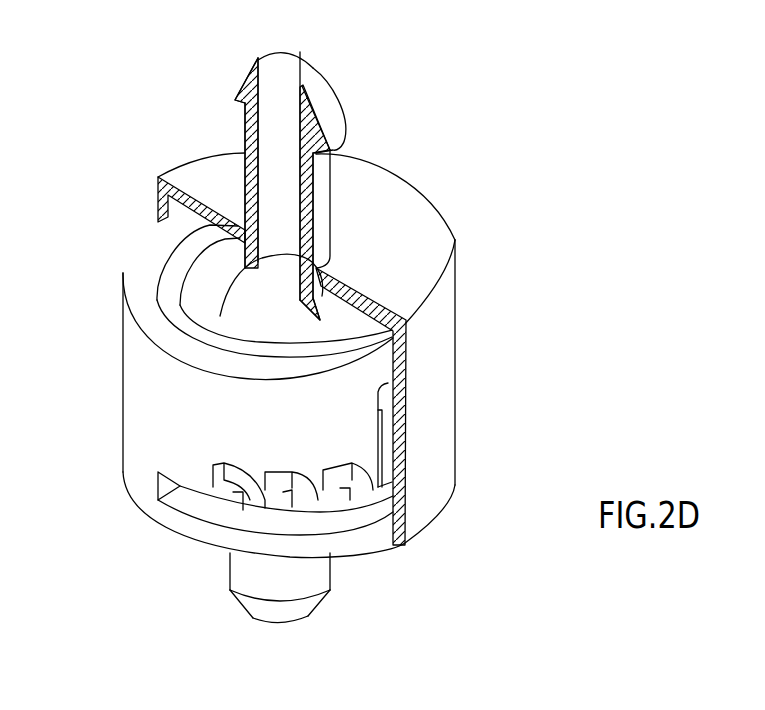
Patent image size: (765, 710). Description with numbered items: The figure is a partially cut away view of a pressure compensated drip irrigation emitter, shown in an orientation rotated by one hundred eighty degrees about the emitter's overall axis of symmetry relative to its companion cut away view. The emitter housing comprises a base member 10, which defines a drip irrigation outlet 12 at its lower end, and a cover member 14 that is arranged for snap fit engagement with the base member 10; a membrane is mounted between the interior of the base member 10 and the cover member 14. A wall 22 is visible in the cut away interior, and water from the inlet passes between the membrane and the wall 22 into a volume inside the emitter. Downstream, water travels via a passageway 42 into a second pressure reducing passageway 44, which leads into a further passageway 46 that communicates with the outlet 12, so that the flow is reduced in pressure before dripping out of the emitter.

The base member 10 is at (395, 592).
The drip irrigation outlet 12 is at (247, 568).
The cover member 14 is at (448, 143).
The wall 22 is at (227, 300).
The passageway 42 is at (400, 418).
The second pressure reducing passageway 44 is at (310, 510).
The passageway 46 is at (165, 487).